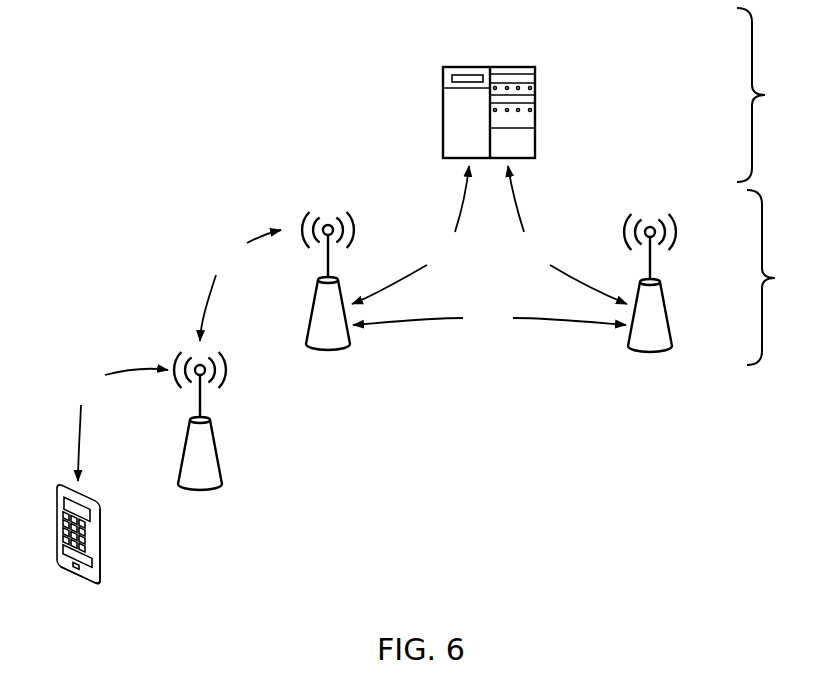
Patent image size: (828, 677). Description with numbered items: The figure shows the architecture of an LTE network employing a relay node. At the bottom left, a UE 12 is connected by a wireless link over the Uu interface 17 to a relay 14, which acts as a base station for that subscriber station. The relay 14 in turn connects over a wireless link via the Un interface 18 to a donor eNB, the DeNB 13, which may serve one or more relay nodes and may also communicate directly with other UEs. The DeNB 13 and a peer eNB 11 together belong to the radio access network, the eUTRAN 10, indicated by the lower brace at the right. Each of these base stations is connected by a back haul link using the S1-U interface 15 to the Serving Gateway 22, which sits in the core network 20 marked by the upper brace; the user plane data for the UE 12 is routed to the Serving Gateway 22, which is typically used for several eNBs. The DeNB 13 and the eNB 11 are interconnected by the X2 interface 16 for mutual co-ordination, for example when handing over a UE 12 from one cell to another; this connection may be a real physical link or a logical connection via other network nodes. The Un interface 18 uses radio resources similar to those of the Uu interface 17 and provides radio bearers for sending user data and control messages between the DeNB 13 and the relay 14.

The eUTRAN 10 is at (781, 277).
The eNB 11 is at (652, 392).
The UE 12 is at (57, 598).
The donor eNB 13 is at (330, 393).
The relay node 14 is at (232, 515).
The S1-U interface 15 is at (540, 232).
The X2 interface 16 is at (490, 333).
The Uu interface 17 is at (70, 392).
The Un interface 18 is at (207, 252).
The core network 20 is at (770, 95).
The Serving Gateway 22 is at (578, 32).